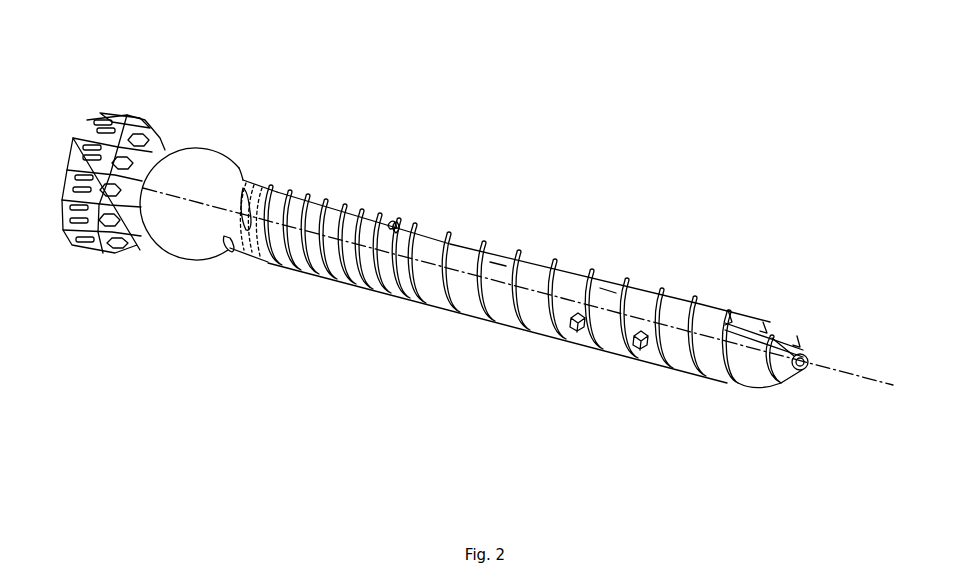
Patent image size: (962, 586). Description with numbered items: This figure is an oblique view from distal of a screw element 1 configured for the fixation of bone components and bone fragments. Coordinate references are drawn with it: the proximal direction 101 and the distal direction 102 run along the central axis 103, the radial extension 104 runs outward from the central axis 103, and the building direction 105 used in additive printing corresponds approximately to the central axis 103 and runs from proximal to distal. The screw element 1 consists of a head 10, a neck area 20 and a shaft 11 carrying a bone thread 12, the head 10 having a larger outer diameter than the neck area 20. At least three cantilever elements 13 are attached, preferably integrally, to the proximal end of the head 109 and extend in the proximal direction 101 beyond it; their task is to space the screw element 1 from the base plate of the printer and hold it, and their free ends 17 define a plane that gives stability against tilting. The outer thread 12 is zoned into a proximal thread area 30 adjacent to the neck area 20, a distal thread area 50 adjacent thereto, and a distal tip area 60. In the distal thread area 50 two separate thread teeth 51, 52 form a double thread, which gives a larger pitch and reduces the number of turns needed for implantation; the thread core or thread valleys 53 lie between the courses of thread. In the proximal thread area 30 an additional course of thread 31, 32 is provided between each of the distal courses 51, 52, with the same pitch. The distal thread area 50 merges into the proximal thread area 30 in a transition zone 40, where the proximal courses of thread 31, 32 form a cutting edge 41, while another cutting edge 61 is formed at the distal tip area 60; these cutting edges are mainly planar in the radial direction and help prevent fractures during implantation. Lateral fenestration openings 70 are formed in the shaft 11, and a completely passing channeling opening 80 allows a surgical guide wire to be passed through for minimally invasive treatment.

The screw element 1 is at (298, 80).
The head 10 is at (172, 240).
The shaft 11 is at (607, 293).
The bone thread 12 is at (555, 270).
The cantilever elements 13 is at (136, 123).
The free ends 17 is at (88, 120).
The neck area 20 is at (240, 148).
The proximal thread area 30 is at (273, 150).
The proximal course of thread 31 is at (338, 285).
The second proximal course of thread 32 is at (302, 274).
The transition zone 40 is at (390, 183).
The cutting edge 41 is at (393, 228).
The distal thread area 50 is at (717, 266).
The first distal thread tooth 51 is at (325, 278).
The second distal thread tooth 52 is at (357, 287).
The thread valleys 53 is at (498, 263).
The distal tip area 60 is at (722, 263).
The cutting edge 61 is at (767, 330).
The lateral fenestration openings 70 is at (640, 342).
The channeling opening 80 is at (807, 360).
The proximal direction 101 is at (117, 287).
The distal direction 102 is at (695, 420).
The central axis 103 is at (867, 378).
The radial extension 104 is at (850, 377).
The building direction 105 is at (160, 378).
The proximal end of the head 109 is at (164, 150).